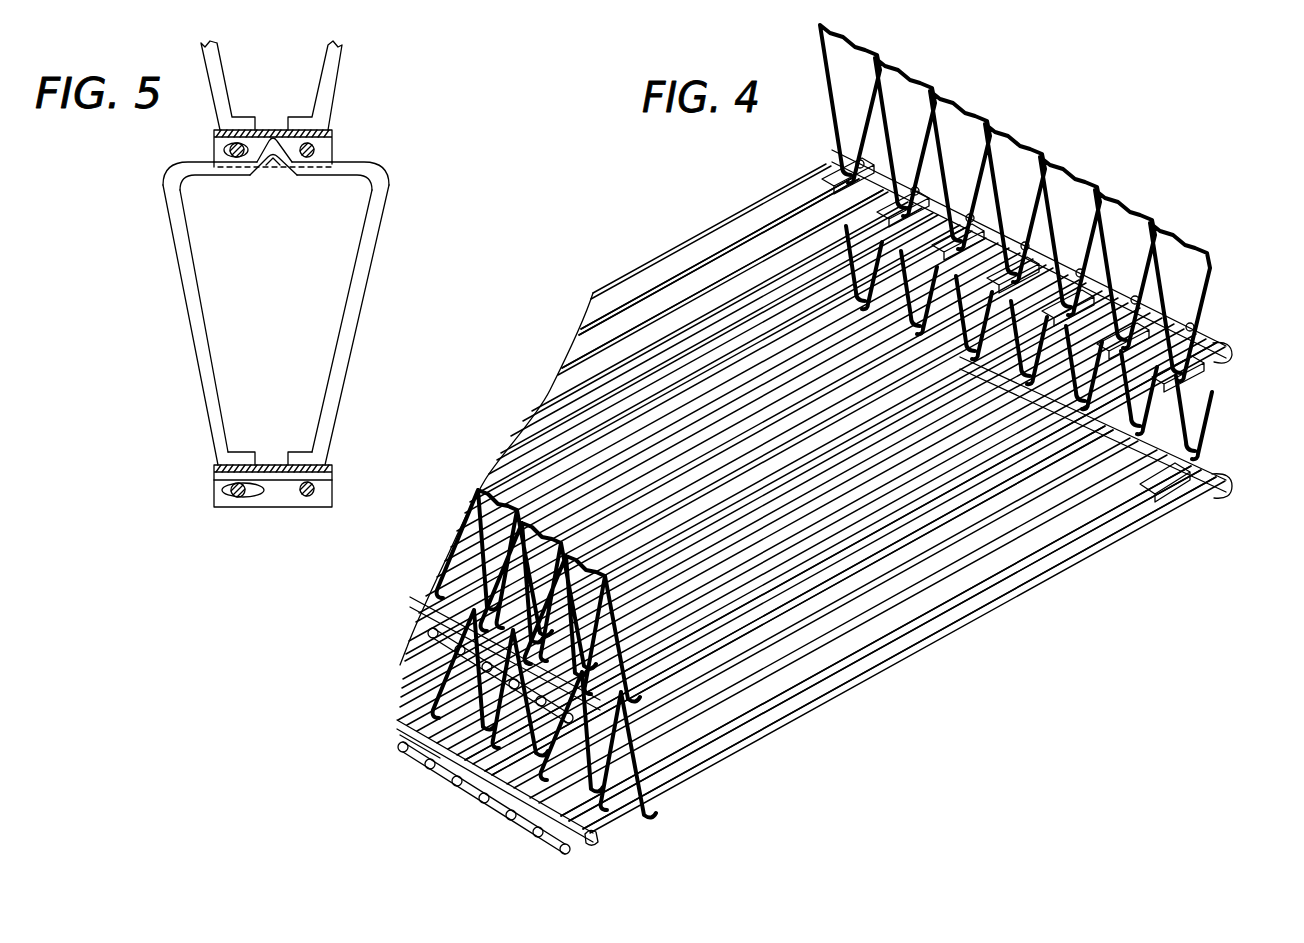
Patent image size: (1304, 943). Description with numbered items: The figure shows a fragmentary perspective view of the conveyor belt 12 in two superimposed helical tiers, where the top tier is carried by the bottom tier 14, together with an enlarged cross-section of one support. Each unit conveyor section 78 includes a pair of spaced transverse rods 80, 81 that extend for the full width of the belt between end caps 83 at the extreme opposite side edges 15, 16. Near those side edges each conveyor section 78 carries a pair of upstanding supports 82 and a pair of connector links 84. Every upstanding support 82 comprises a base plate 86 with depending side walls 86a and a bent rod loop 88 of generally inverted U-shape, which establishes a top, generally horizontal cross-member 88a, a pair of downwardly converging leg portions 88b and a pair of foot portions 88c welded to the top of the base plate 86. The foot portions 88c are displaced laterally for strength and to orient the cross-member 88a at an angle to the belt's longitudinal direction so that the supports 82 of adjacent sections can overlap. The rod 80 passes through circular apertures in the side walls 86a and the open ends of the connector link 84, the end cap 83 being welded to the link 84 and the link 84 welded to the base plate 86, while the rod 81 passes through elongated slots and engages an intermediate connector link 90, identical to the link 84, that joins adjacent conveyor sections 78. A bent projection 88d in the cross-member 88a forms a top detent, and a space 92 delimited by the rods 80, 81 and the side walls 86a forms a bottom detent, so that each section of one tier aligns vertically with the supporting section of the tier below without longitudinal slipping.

In FIG. 4, the conveyor belt 12 is at (720, 208).
In FIG. 4, the lower conveyor belt 14 is at (820, 712).
In FIG. 4, the side edge 15 is at (1231, 485).
In FIG. 4, the side edge 16 is at (831, 507).
In FIG. 4, the conveyor section 78 is at (657, 278).
In FIG. 5, the transverse rod 80 is at (308, 156).
In FIG. 4, the transverse rod 80 is at (618, 374).
In FIG. 5, the transverse rod 81 is at (242, 153).
In FIG. 4, the transverse rod 81 is at (647, 328).
In FIG. 5, the upstanding support 82 is at (355, 371).
In FIG. 4, the upstanding support 82 is at (1072, 165).
In FIG. 4, the end cap 83 is at (442, 782).
In FIG. 4, the connector link 84 is at (600, 836).
In FIG. 5, the base plate 86 is at (315, 137).
In FIG. 4, the base plate 86 is at (1158, 494).
In FIG. 5, the depending side walls 86a is at (323, 500).
In FIG. 5, the bent rod loop 88 is at (390, 192).
In FIG. 4, the bent rod loop 88 is at (1206, 268).
In FIG. 5, the cross-member 88a is at (350, 163).
In FIG. 5, the leg portions 88b is at (333, 74).
In FIG. 5, the foot portions 88c is at (293, 452).
In FIG. 5, the bent projection 88d is at (272, 138).
In FIG. 4, the intermediate connector link 90 is at (520, 843).
In FIG. 5, the space 92 is at (273, 163).